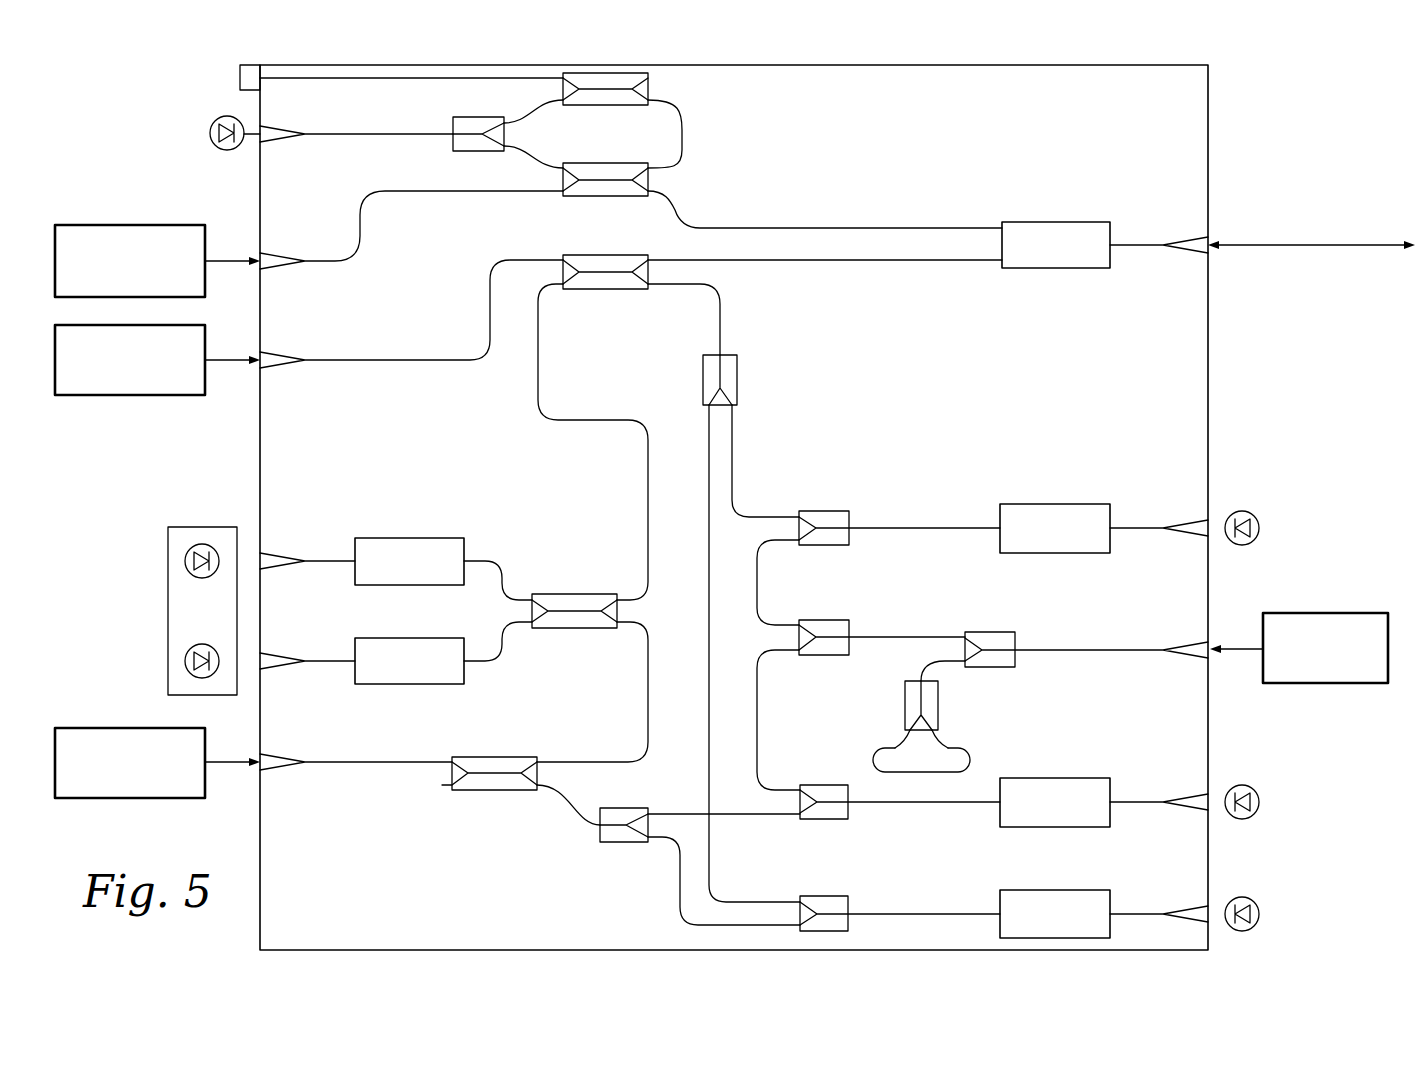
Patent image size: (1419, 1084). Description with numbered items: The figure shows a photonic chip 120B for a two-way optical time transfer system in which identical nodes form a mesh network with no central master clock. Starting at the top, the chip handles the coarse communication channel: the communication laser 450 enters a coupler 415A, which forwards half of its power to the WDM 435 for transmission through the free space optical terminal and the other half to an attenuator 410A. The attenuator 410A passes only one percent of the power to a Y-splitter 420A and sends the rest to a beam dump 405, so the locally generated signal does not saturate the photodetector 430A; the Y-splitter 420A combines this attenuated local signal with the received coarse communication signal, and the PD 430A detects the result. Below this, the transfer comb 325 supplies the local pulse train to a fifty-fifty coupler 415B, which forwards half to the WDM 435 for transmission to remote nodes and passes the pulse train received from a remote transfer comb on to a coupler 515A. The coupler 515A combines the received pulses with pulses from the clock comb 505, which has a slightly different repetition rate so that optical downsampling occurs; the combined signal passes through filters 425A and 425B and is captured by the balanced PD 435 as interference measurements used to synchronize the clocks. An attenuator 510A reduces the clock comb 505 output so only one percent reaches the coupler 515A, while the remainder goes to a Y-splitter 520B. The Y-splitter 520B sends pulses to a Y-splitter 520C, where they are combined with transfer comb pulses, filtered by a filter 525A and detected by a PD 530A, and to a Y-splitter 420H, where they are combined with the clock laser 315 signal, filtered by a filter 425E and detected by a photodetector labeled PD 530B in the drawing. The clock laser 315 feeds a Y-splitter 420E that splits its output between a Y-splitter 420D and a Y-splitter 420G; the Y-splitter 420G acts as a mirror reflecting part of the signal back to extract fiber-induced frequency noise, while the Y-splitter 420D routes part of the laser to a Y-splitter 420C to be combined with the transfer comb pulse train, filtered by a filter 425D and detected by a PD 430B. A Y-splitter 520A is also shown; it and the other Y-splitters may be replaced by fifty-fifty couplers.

The photonic chip 120B is at (1213, 85).
The beam dump 405 is at (240, 78).
The photodetector 430A is at (222, 152).
The attenuator 410A is at (565, 90).
The Y-splitter 420A is at (480, 140).
The coupler 415A is at (602, 190).
The 50/50 coupler 415B is at (611, 292).
The communication laser 450 is at (132, 225).
The transfer comb 325 is at (130, 395).
The wavelength division multiplexer (WDM) / balanced PD 435 is at (195, 527).
The filter 425A is at (447, 538).
The filter 425B is at (447, 638).
The 50/50 coupler 515A is at (566, 603).
The clock comb 505 is at (130, 728).
The attenuator 510A is at (493, 786).
The Y-splitter 520B is at (627, 835).
The Y-splitter 520A is at (726, 378).
The Y-splitter 420C is at (826, 520).
The Y-splitter 420D is at (826, 630).
The Y-splitter 420E is at (992, 641).
The Y-splitter 420G is at (930, 701).
The Y-splitter 420H is at (826, 795).
The Y-splitter 520C is at (826, 905).
The filter 425D is at (1085, 505).
The photodetector 430B is at (1250, 512).
The clock laser 315 is at (1312, 613).
The filter 425E is at (1090, 778).
The photodetector 530A is at (1250, 786).
The filter 525A is at (1090, 890).
The photodetector 530B is at (1250, 898).